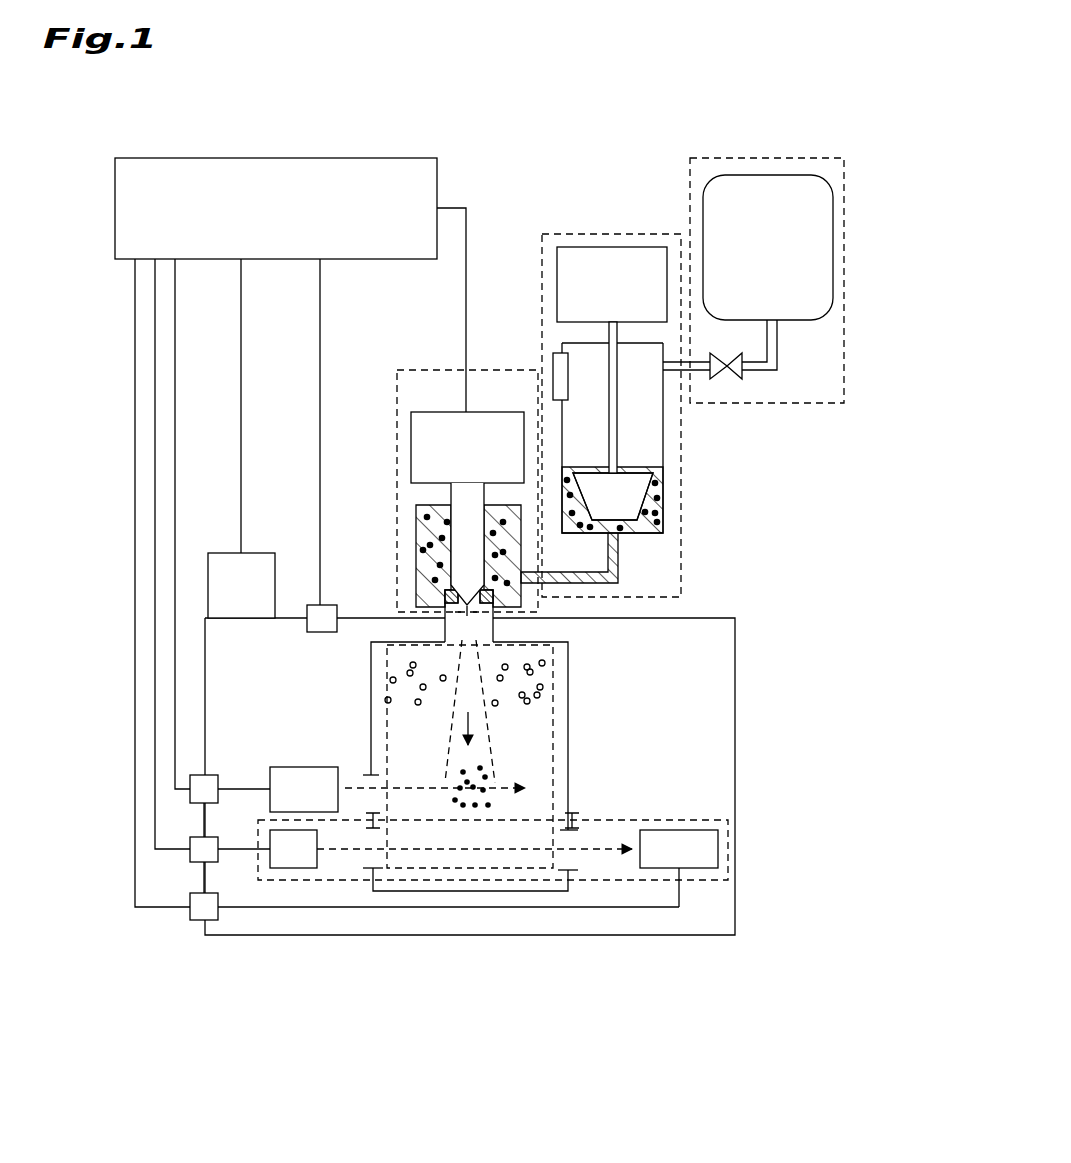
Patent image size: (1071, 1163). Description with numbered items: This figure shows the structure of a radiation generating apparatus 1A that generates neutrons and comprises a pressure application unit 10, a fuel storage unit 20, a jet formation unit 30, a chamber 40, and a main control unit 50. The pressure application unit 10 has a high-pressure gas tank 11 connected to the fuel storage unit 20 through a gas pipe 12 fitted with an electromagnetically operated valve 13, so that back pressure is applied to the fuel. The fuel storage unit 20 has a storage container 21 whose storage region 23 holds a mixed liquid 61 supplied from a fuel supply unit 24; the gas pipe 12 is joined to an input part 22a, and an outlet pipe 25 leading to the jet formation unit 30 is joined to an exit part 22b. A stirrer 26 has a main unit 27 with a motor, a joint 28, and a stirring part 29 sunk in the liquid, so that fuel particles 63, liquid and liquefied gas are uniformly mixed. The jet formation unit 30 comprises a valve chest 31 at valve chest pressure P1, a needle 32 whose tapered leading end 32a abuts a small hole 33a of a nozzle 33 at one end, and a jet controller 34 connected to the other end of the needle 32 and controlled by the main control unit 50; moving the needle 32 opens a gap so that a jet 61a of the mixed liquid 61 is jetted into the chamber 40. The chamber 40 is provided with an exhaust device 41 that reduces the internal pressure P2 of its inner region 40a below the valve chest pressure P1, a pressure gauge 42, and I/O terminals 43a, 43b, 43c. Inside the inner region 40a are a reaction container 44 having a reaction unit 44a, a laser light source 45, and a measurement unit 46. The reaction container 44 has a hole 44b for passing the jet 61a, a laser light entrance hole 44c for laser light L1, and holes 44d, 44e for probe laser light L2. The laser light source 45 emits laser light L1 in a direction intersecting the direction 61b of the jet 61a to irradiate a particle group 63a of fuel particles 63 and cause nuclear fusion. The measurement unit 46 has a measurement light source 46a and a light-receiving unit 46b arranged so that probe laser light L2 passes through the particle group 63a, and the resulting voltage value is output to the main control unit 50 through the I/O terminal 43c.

The radiation generating apparatus 1A is at (725, 68).
The pressure application unit 10 is at (847, 207).
The high-pressure gas tank 11 is at (833, 260).
The gas pipe 12 is at (777, 342).
The valve 13 is at (732, 378).
The fuel storage unit 20 is at (632, 234).
The storage container 21 is at (674, 445).
The input part 22a is at (660, 375).
The exit part 22b is at (620, 550).
The storage region 23 is at (645, 362).
The fuel supply unit 24 is at (553, 360).
The outlet pipe 25 is at (625, 583).
The stirrer 26 is at (613, 240).
The main unit 27 is at (577, 258).
The joint 28 is at (607, 330).
The stirring part 29 is at (663, 503).
The jet formation unit 30 is at (425, 368).
The valve chest 31 is at (416, 537).
The needle 32 is at (451, 494).
The leading end 32a is at (466, 640).
The nozzle 33 is at (445, 595).
The small hole 33a is at (493, 620).
The jet controller 34 is at (411, 432).
The chamber 40 is at (736, 688).
The inner region 40a is at (715, 643).
The exhaust device 41 is at (215, 553).
The pressure gauge 42 is at (318, 605).
The I/O terminal 43a is at (204, 775).
The I/O terminal 43b is at (190, 858).
The I/O terminal 43c is at (200, 920).
The reaction container 44 is at (568, 672).
The reaction unit 44a is at (553, 725).
The hole 44b is at (445, 632).
The laser light entrance hole 44c is at (370, 775).
The hole 44d is at (365, 868).
The hole 44e is at (590, 870).
The laser light source 45 is at (288, 767).
The measurement unit 46 is at (667, 820).
The measurement light source 46a is at (288, 868).
The light-receiving unit 46b is at (718, 858).
The main control unit 50 is at (370, 158).
The mixed liquid 61 is at (655, 472).
The jet 61a is at (455, 727).
The direction 61b is at (472, 730).
The fuel particles 63 is at (665, 527).
The particle group 63a is at (506, 760).
The valve chest pressure P1 is at (416, 508).
The internal pressure P2 is at (252, 662).
The laser light L1 is at (347, 787).
The probe laser light L2 is at (342, 850).